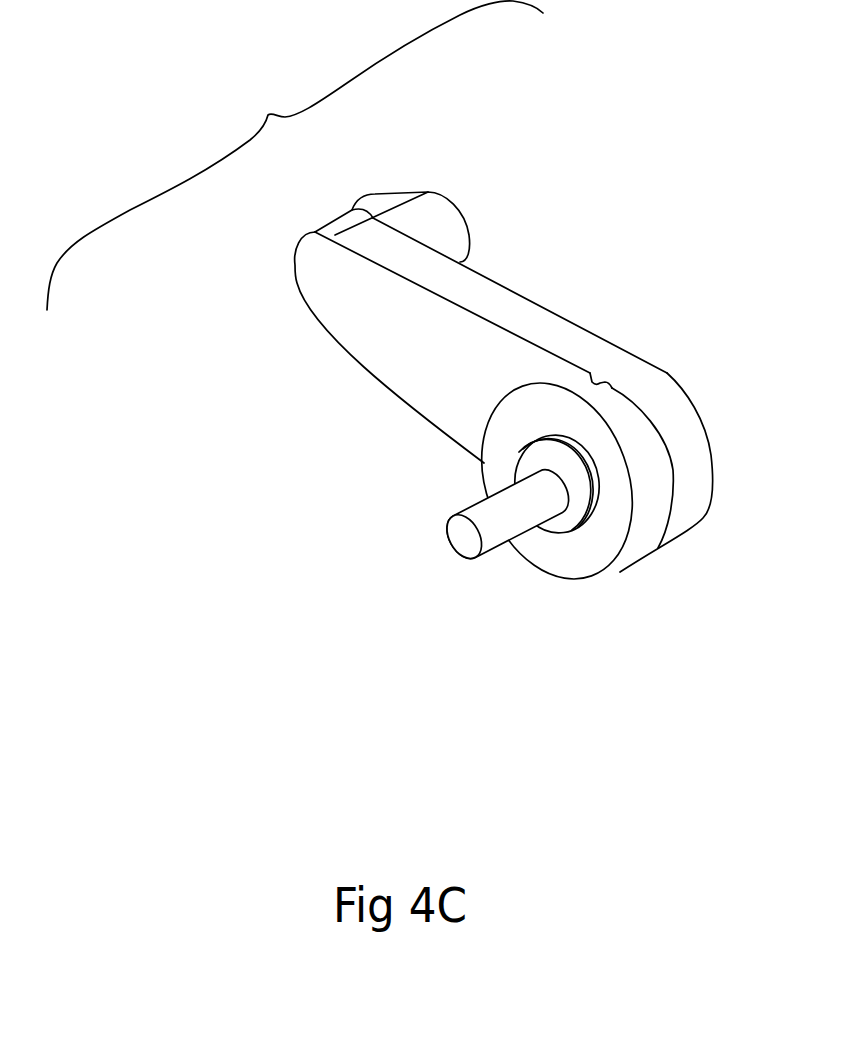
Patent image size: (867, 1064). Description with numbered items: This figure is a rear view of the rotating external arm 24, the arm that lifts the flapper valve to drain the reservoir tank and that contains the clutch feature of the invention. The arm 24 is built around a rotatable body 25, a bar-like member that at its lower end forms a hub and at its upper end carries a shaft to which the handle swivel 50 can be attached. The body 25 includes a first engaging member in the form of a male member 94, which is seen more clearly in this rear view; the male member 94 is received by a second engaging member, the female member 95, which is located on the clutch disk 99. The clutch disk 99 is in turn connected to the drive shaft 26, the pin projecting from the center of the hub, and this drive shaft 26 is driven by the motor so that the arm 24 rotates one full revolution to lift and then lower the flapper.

The external arm 24 is at (267, 113).
The rotatable body 25 is at (463, 285).
The drive shaft 26 is at (493, 515).
The handle swivel 50 is at (430, 227).
The male member 94 is at (600, 372).
The female member 95 is at (590, 385).
The clutch disk 99 is at (645, 523).